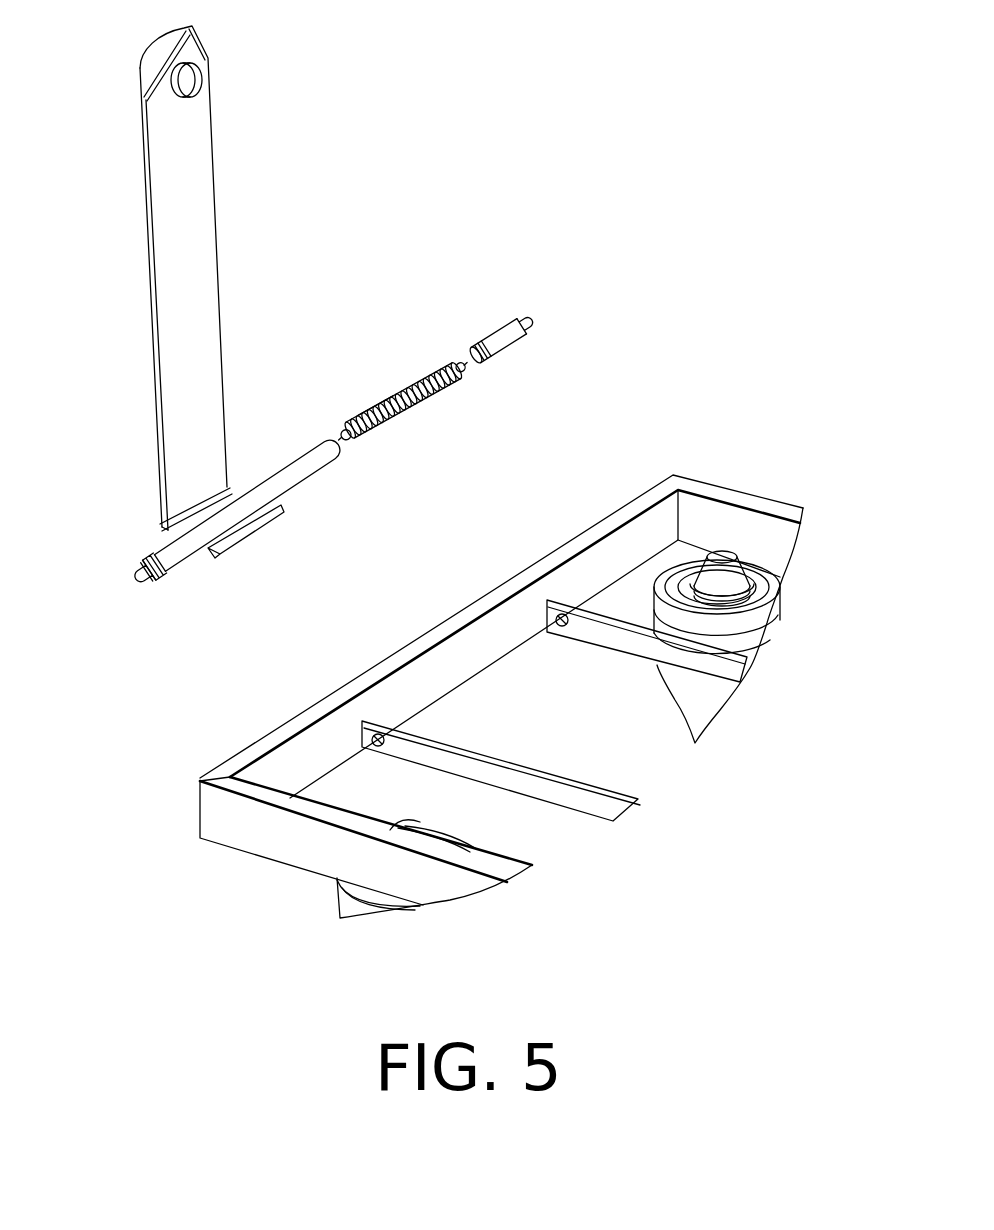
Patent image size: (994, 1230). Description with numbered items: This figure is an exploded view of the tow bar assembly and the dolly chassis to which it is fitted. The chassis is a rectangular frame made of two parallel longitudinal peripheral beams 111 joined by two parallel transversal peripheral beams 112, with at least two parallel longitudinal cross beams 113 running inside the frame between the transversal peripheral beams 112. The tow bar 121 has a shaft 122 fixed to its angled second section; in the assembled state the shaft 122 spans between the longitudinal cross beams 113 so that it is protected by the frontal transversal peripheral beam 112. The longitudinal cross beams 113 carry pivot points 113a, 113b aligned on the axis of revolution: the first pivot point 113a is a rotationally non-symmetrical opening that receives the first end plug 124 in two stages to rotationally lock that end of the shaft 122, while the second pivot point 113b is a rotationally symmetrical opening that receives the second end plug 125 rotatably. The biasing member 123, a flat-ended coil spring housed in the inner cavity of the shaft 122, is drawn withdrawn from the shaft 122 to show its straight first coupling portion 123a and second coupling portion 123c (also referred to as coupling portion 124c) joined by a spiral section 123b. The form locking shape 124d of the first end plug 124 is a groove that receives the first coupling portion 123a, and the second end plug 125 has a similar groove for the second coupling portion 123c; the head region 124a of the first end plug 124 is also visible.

The longitudinal peripheral beam 111 is at (250, 842).
The transversal peripheral beam 112 is at (263, 747).
The longitudinal cross beam 113 is at (568, 764).
The first pivot point 113a is at (556, 624).
The second pivot point 113b is at (378, 748).
The tow bar 121 is at (198, 187).
The shaft 122 is at (182, 545).
The biasing member 123 is at (418, 409).
The first coupling portion 123a is at (470, 373).
The spiral section 123b is at (423, 378).
The second coupling portion 123c is at (345, 440).
The first end plug 124 is at (500, 279).
The pin head 124a is at (514, 347).
The second coupling portion 124c is at (498, 325).
The form locking shape 124d is at (466, 352).
The second end plug 125 is at (142, 575).